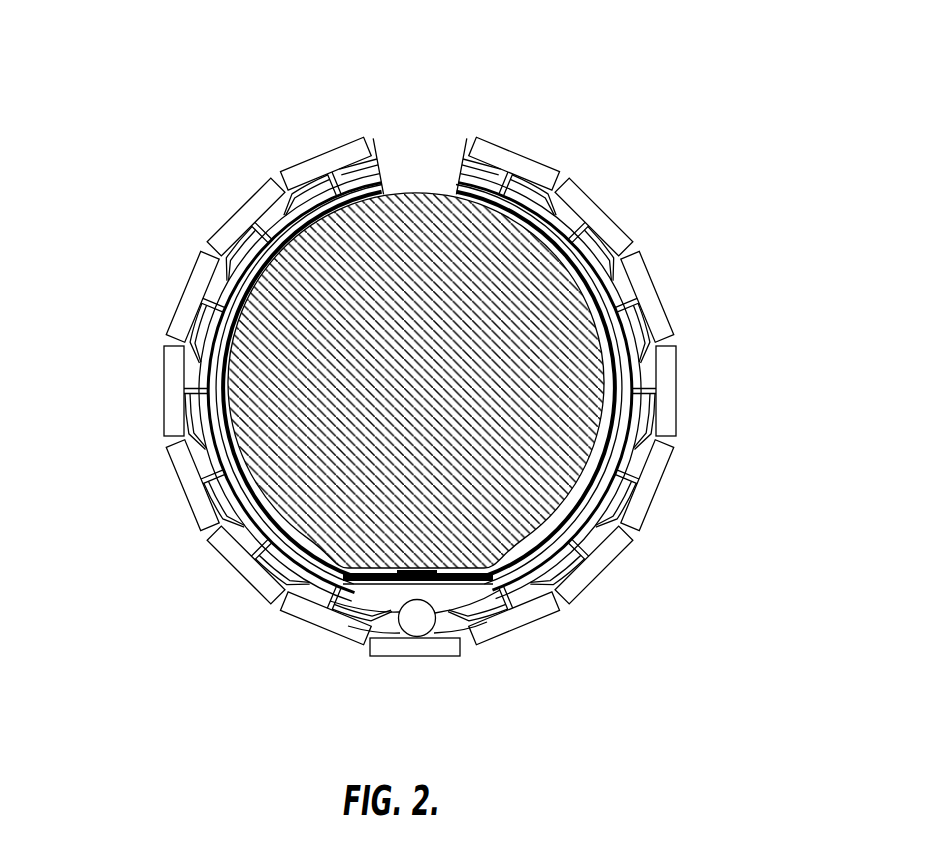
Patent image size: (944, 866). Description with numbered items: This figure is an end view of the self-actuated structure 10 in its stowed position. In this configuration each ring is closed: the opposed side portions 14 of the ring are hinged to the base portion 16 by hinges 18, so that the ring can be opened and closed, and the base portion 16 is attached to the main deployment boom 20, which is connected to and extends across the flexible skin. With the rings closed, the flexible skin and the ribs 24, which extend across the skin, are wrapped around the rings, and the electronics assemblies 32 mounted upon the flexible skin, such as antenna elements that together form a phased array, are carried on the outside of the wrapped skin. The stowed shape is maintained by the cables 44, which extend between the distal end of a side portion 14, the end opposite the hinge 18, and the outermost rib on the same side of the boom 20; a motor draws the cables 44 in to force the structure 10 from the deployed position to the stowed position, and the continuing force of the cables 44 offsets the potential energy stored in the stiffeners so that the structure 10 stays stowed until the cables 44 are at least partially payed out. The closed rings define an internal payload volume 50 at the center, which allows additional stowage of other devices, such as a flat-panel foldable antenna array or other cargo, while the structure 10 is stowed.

The self-actuated structure 10 is at (766, 573).
The side portions 14 is at (226, 449).
The base portion 16 is at (366, 604).
The hinges 18 is at (472, 598).
The main deployment boom 20 is at (417, 626).
The ribs 24 is at (183, 388).
The electronics assemblies 32 is at (654, 268).
The cables 44 is at (388, 154).
The internal payload volume 50 is at (440, 428).